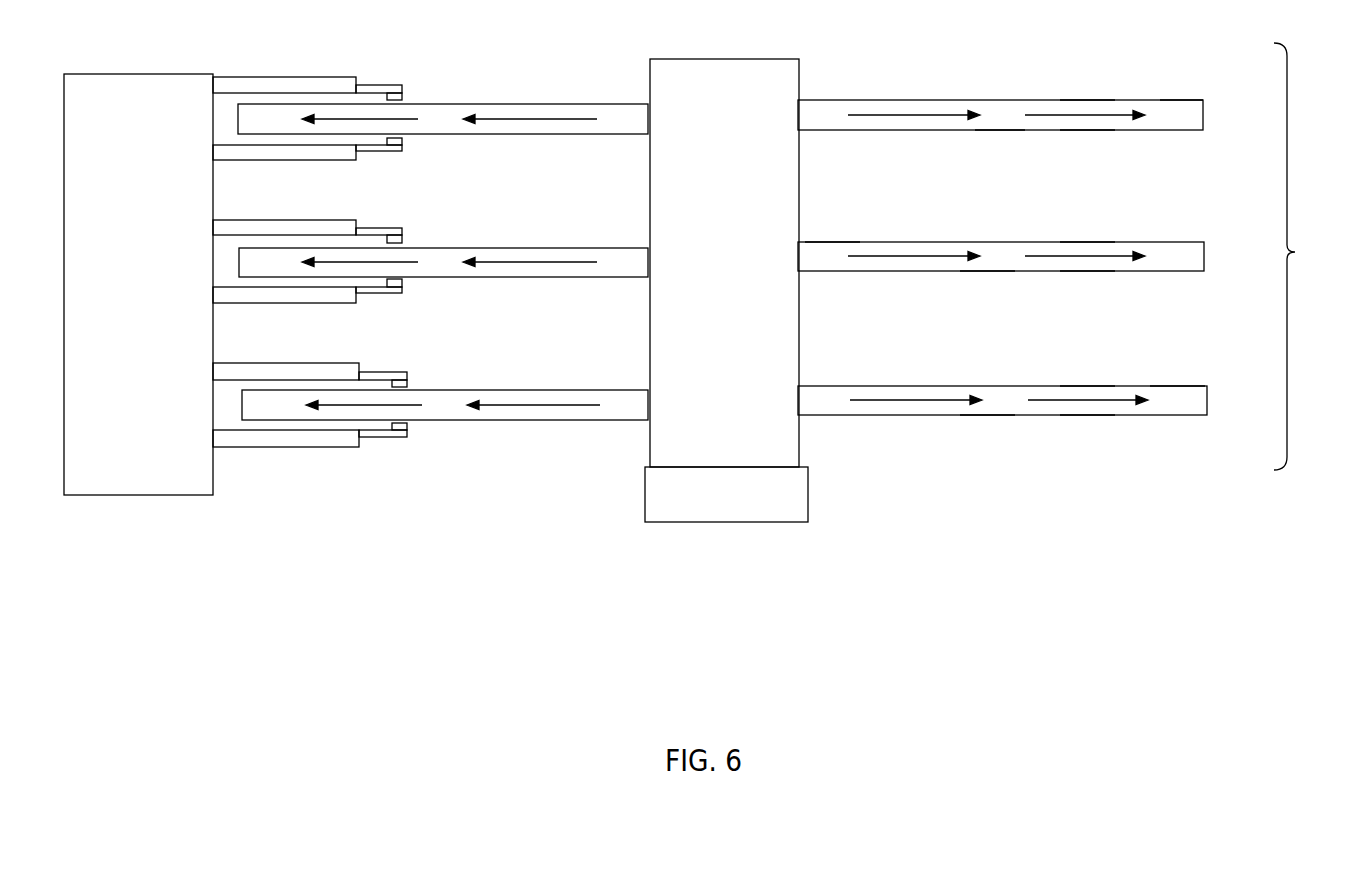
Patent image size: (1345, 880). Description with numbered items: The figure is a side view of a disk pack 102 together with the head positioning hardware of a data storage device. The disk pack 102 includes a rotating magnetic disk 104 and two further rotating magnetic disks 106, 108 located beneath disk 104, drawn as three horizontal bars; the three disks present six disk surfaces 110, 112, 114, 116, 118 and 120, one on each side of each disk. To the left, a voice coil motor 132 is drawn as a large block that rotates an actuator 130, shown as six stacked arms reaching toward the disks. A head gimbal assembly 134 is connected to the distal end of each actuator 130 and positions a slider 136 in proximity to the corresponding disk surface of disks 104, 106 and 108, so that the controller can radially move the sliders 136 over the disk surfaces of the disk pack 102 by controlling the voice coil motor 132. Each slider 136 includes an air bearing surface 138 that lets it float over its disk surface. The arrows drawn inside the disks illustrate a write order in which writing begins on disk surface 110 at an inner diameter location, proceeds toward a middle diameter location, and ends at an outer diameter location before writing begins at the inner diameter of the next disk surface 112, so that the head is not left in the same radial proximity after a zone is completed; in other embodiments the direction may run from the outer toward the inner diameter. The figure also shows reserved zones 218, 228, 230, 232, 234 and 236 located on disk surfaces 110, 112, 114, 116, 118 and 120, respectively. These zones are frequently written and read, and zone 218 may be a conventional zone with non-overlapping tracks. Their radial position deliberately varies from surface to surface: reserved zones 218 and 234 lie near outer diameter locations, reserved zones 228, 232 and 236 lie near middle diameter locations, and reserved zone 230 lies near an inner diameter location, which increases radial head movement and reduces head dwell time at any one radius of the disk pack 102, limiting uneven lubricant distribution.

The disk pack 102 is at (1306, 256).
The rotating magnetic disk 104 is at (1207, 110).
The rotating magnetic disk 106 is at (1207, 251).
The rotating magnetic disk 108 is at (1210, 396).
The disk surface 110 is at (1087, 99).
The disk surface 112 is at (1087, 131).
The disk surface 114 is at (1087, 241).
The disk surface 116 is at (1087, 272).
The disk surface 118 is at (1087, 385).
The disk surface 120 is at (1087, 416).
The actuator 130 is at (263, 77).
The voice coil motor 132 is at (130, 74).
The head gimbal assembly 134 is at (382, 82).
The slider 136 is at (403, 93).
The air bearing surface 138 is at (722, 537).
The reserved zone 218 is at (1183, 100).
The reserved zone 228 is at (1000, 131).
The reserved zone 230 is at (832, 241).
The reserved zone 232 is at (988, 273).
The reserved zone 234 is at (1175, 385).
The reserved zone 236 is at (988, 417).